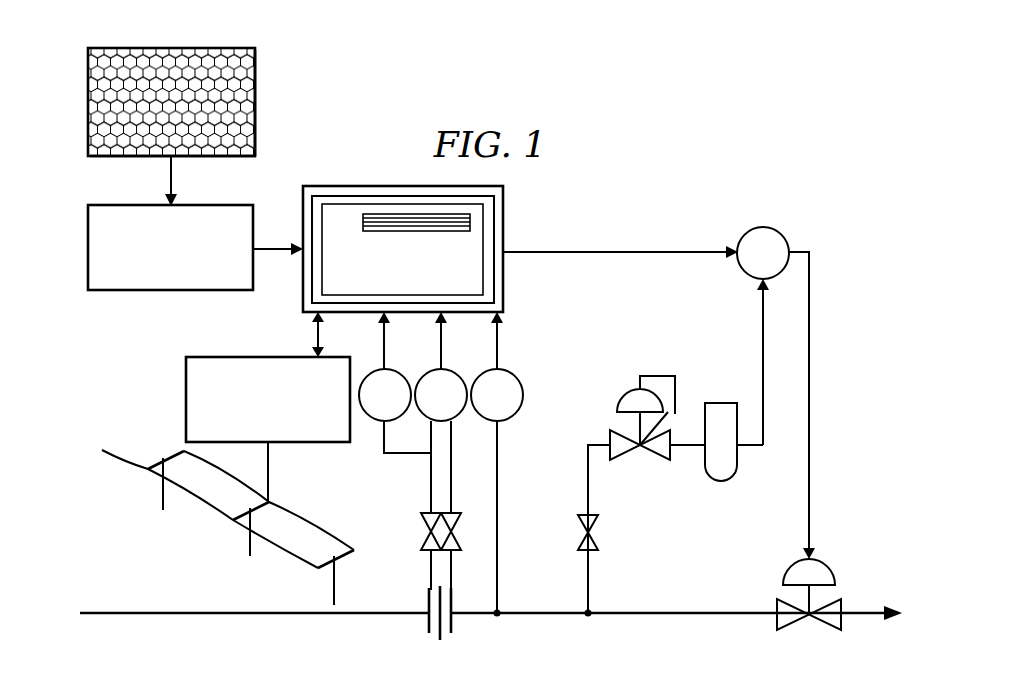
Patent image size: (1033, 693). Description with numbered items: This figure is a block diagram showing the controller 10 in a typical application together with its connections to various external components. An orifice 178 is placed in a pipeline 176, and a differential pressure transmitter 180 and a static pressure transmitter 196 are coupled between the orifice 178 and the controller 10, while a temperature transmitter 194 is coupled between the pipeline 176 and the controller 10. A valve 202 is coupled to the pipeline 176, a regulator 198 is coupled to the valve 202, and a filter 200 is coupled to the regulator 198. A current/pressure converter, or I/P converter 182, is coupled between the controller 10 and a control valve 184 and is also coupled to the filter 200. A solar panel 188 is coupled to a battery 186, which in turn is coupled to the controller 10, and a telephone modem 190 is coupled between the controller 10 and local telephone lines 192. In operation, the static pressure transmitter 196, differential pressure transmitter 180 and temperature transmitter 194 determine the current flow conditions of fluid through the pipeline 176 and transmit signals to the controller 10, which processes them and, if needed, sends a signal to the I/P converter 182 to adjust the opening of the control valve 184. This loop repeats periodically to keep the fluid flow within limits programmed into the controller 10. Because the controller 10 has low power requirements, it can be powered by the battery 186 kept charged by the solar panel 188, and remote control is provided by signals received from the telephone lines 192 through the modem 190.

The controller 10 is at (412, 269).
The pipeline 176 is at (118, 612).
The orifice 178 is at (427, 606).
The differential pressure transmitter 180 is at (458, 422).
The current/pressure converter 182 is at (781, 235).
The control valve 184 is at (840, 552).
The battery 186 is at (207, 286).
The solar panel 188 is at (257, 80).
The telephone modem 190 is at (300, 440).
The telephone lines 192 is at (322, 526).
The temperature transmitter 194 is at (515, 372).
The static pressure transmitter 196 is at (378, 366).
The regulator 198 is at (612, 432).
The filter 200 is at (736, 456).
The valve 202 is at (597, 528).